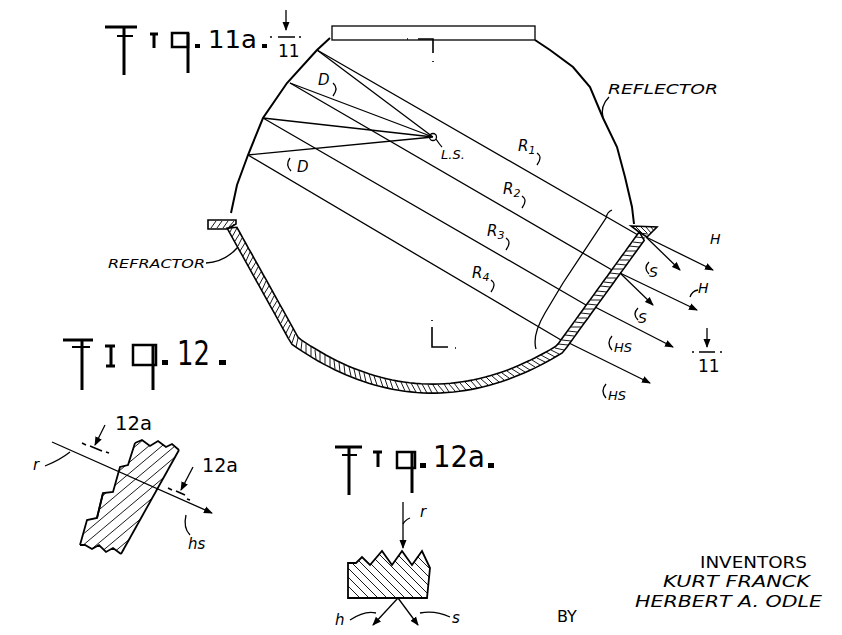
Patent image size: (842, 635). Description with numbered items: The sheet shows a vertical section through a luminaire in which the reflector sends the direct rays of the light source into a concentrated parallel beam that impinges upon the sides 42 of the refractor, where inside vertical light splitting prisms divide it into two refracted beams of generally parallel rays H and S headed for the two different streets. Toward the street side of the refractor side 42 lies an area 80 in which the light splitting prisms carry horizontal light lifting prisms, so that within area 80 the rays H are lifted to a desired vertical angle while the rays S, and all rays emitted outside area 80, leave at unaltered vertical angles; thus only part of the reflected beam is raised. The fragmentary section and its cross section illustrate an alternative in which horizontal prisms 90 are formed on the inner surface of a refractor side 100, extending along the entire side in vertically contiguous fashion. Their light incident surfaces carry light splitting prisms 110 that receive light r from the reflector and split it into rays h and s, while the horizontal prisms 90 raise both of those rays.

In FIG. 11A, the refractor side 42 is at (580, 315).
In FIG. 11A, the area 80 is at (563, 280).
In FIG. 12, the light splitting prisms 110 is at (102, 503).
In FIG. 12A, the light splitting prisms 110 is at (374, 558).
In FIG. 12, the horizontal prisms 90 is at (98, 515).
In FIG. 12, the refractor side 100 is at (136, 545).